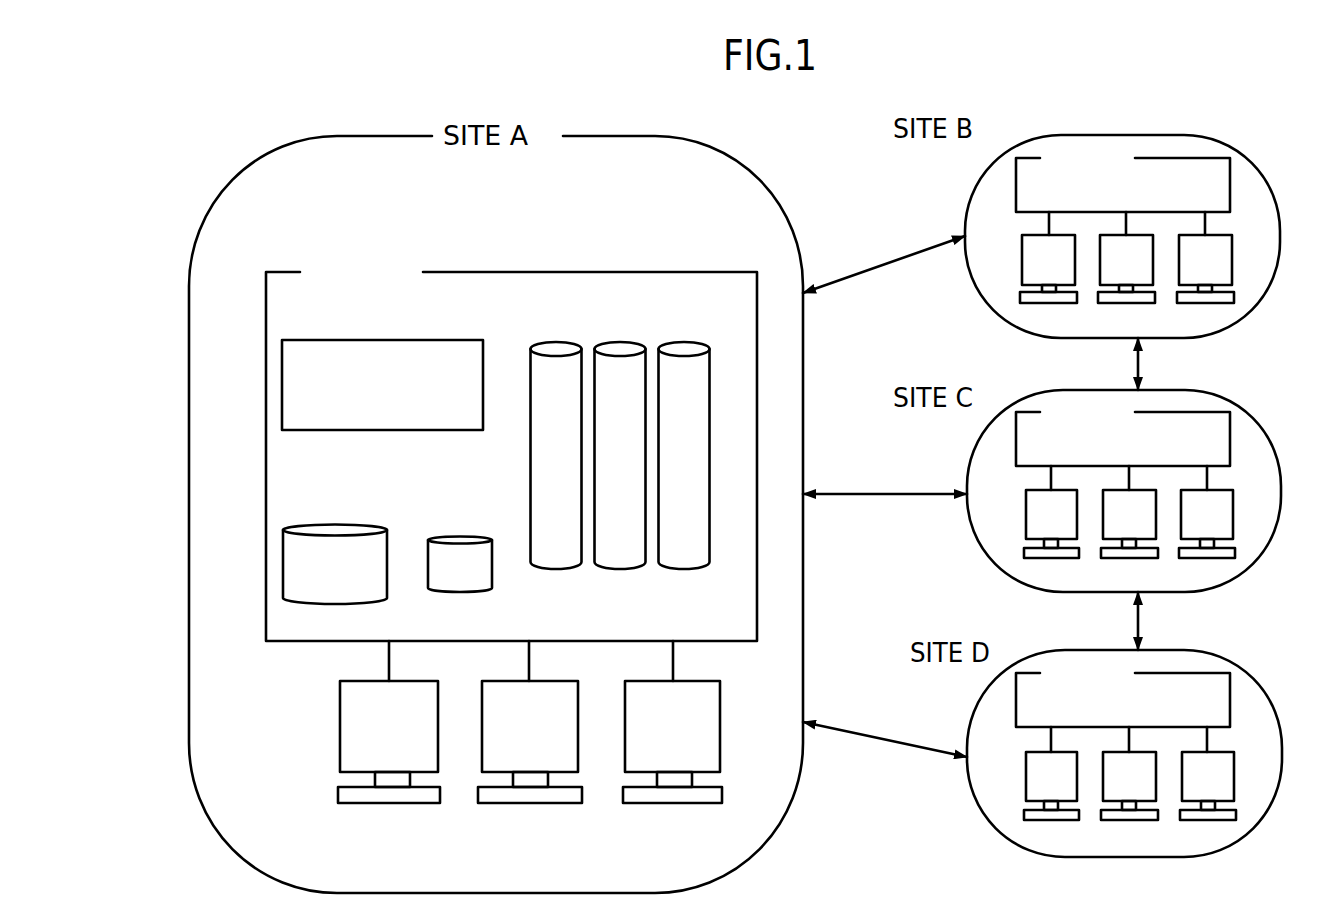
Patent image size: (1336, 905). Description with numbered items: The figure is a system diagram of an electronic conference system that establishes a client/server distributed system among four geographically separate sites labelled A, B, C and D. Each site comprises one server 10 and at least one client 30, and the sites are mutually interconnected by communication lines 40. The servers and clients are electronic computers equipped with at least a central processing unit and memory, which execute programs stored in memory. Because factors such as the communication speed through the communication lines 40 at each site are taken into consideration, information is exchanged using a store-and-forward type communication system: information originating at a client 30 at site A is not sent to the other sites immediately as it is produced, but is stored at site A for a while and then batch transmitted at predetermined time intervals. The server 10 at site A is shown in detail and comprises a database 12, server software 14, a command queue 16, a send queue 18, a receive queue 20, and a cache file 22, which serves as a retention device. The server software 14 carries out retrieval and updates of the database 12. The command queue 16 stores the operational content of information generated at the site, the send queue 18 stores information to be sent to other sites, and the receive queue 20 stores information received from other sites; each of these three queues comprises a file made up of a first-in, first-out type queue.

The server 10 is at (645, 266).
The database 12 is at (282, 569).
The server software 14 is at (400, 340).
The command queue 16 is at (550, 340).
The send queue 18 is at (614, 340).
The receive queue 20 is at (677, 340).
The cache file 22 is at (470, 568).
The client 30 is at (340, 793).
The communication lines 40 is at (905, 265).